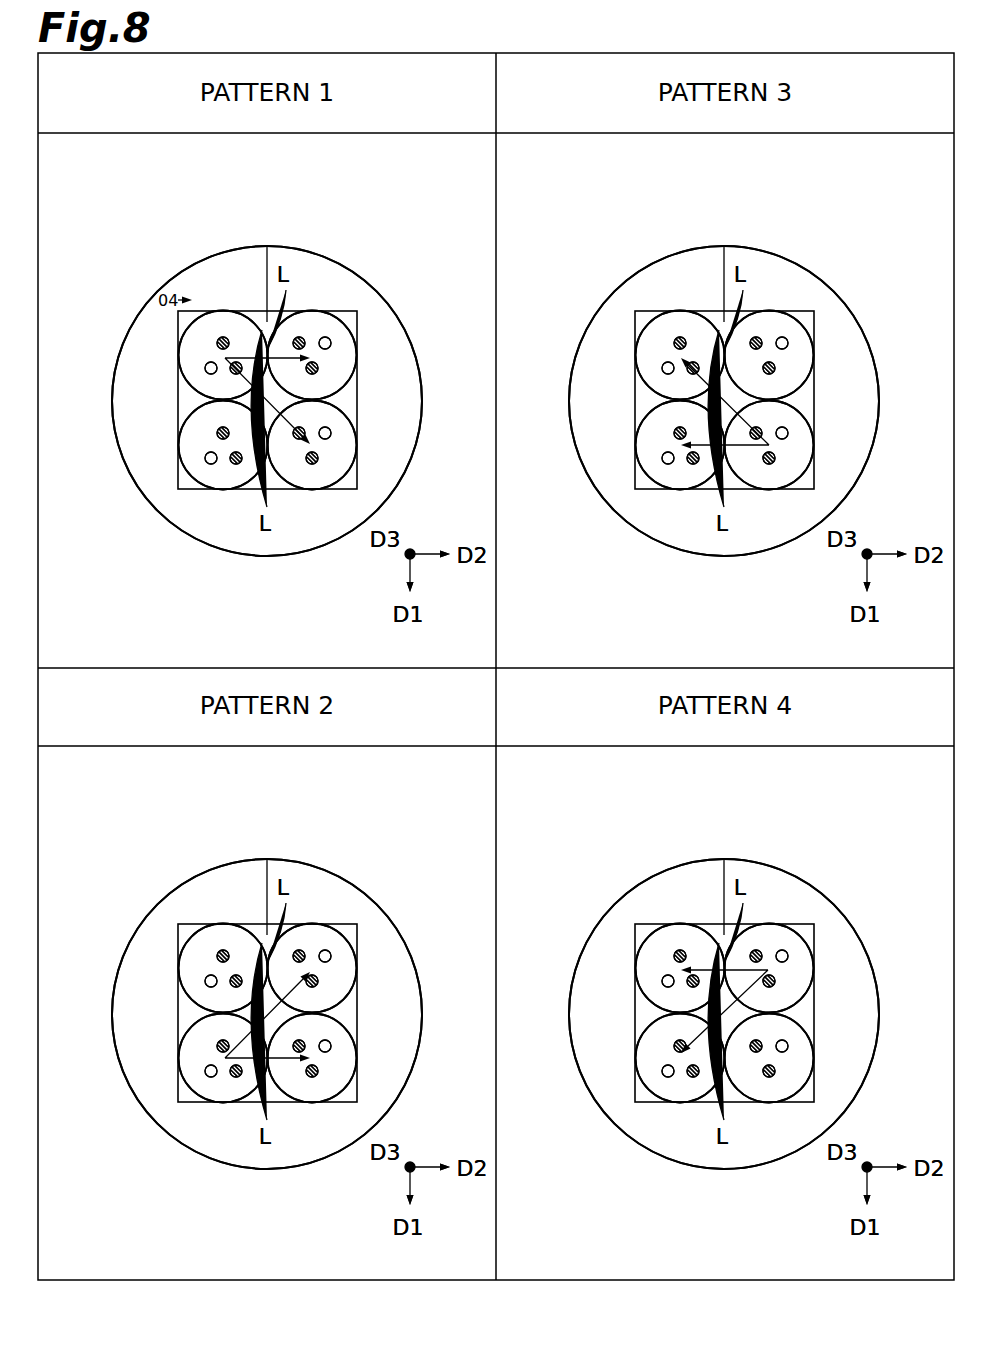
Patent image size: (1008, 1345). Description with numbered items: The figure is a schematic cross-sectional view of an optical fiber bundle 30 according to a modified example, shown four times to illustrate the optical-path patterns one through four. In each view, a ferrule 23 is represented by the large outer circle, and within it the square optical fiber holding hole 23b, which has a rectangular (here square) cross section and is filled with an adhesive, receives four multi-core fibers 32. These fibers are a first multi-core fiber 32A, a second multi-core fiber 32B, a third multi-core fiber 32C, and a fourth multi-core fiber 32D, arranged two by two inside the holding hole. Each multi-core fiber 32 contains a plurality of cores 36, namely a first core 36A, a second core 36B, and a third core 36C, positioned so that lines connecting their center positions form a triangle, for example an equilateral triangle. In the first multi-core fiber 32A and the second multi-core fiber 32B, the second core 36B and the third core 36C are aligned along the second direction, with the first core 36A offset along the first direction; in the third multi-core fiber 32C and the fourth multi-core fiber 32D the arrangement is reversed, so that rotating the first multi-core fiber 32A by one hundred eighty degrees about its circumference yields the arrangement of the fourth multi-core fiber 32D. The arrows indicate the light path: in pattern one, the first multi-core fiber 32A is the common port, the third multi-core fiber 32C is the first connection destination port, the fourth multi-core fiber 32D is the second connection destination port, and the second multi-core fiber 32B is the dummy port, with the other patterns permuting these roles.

The ferrule 23 is at (492, 696).
The optical fiber holding hole 23b is at (431, 706).
The optical fiber bundle 30 is at (502, 690).
The multi-core fiber 32 is at (526, 706).
The first multi-core fiber 32A is at (417, 578).
The second multi-core fiber 32B is at (428, 817).
The third multi-core fiber 32C is at (552, 836).
The fourth multi-core fiber 32D is at (606, 630).
The core 36 is at (497, 706).
The first core 36A is at (497, 706).
The second core 36B is at (497, 706).
The third core 36C is at (568, 706).